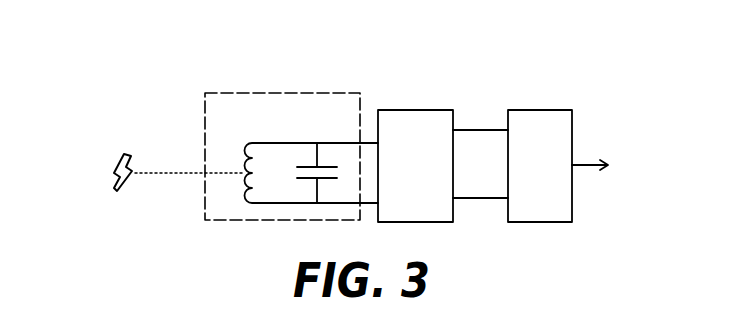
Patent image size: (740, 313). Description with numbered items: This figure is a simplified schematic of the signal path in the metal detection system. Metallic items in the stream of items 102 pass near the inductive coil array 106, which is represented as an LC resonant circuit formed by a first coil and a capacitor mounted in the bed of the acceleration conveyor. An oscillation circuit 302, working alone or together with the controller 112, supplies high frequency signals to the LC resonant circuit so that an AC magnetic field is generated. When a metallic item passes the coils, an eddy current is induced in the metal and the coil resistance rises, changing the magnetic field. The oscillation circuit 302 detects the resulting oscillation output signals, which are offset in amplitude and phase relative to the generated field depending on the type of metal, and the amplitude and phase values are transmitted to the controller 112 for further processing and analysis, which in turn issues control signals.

The stream of items 102 is at (126, 155).
The inductive coil array 106 is at (342, 105).
The oscillation circuit 302 is at (408, 128).
The controller 112 is at (542, 122).